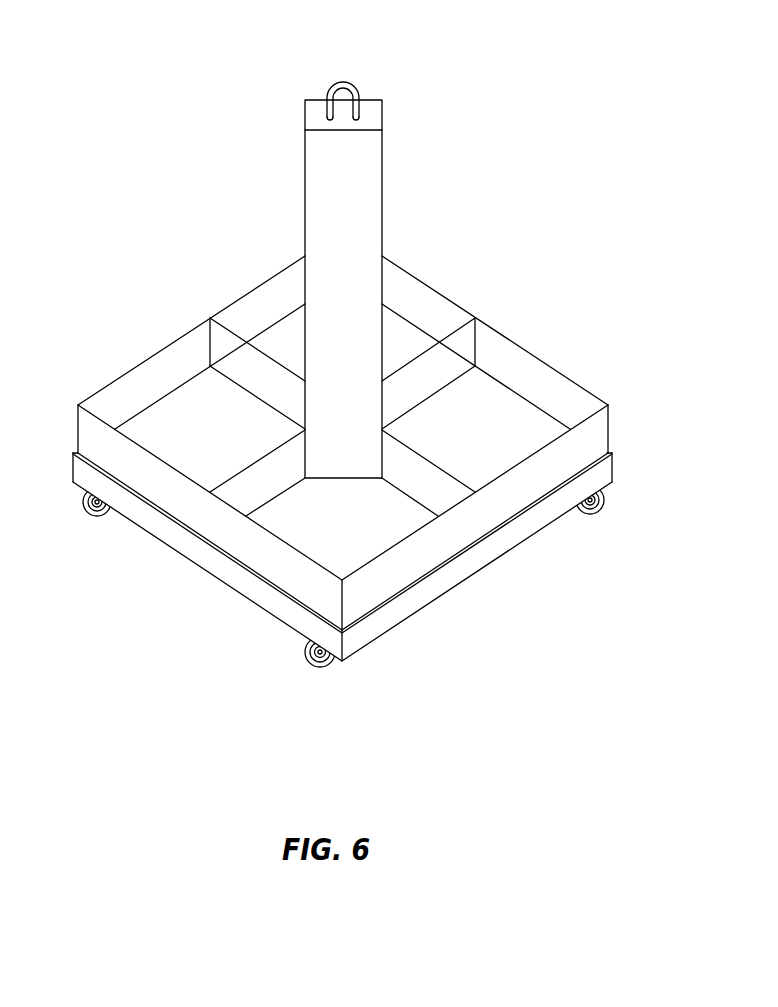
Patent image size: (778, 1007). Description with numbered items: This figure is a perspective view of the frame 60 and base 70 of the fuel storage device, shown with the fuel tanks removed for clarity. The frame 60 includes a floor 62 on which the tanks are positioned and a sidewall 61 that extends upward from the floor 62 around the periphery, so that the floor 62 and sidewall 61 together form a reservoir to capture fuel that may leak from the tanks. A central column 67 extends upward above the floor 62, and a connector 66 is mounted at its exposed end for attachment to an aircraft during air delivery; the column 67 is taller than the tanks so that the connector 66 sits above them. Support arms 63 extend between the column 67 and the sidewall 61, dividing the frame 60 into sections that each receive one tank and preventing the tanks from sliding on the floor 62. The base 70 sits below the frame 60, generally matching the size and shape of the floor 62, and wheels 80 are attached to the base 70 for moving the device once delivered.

The frame 60 is at (150, 143).
The sidewall 61 is at (430, 288).
The floor 62 is at (330, 528).
The support arms 63 is at (258, 362).
The connector 66 is at (346, 78).
The central column 67 is at (360, 188).
The base 70 is at (270, 597).
The wheels 80 is at (310, 640).